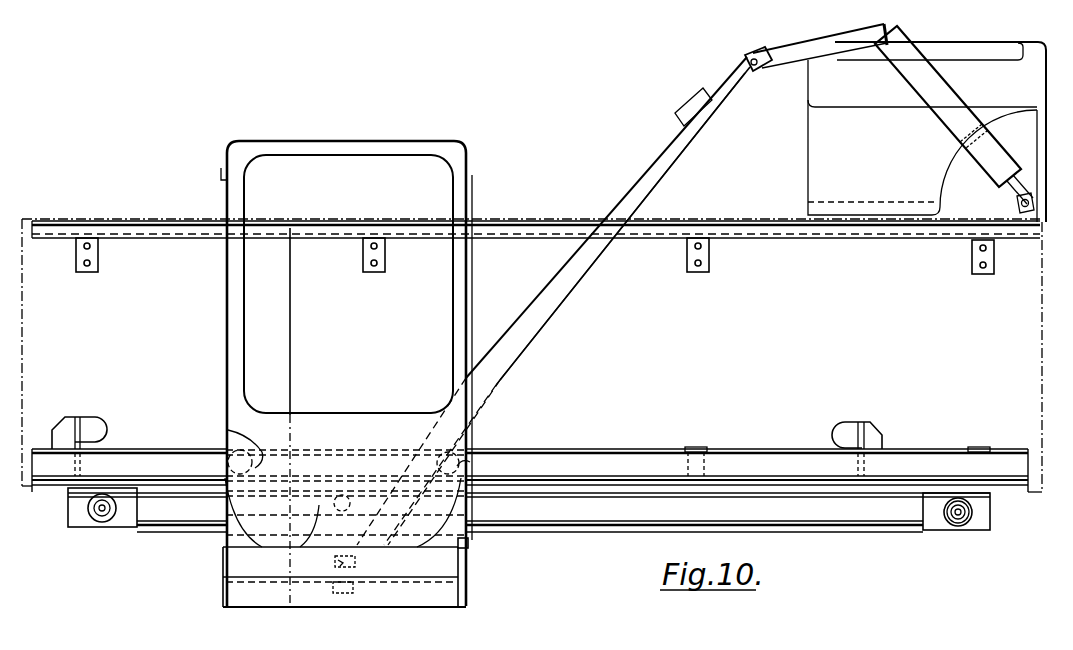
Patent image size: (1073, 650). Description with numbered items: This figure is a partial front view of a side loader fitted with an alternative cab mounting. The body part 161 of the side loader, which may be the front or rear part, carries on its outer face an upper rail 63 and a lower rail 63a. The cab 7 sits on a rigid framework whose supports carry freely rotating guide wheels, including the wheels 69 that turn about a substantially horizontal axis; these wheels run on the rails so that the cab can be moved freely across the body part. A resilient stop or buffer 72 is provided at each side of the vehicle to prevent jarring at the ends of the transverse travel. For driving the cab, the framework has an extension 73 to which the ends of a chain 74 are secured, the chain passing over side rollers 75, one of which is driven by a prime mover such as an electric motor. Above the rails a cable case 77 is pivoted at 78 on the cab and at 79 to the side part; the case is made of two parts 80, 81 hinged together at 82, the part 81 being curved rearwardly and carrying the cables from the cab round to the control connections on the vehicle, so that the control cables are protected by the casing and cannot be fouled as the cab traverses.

The cab 7 is at (407, 188).
The upper rail 63 is at (523, 223).
The lower rail 63a is at (577, 452).
The wheels 69 is at (214, 426).
The resilient stop or buffer 72 is at (88, 430).
The extension 73 is at (345, 572).
The chain 74 is at (543, 520).
The side rollers 75 is at (102, 515).
The cable case 77 is at (533, 322).
The pivot 78 is at (358, 571).
The pivot 79 is at (1024, 208).
The part of cable case 80 is at (940, 107).
The part of cable case 81 is at (598, 237).
The hinge 82 is at (765, 67).
The body part 161 is at (117, 307).